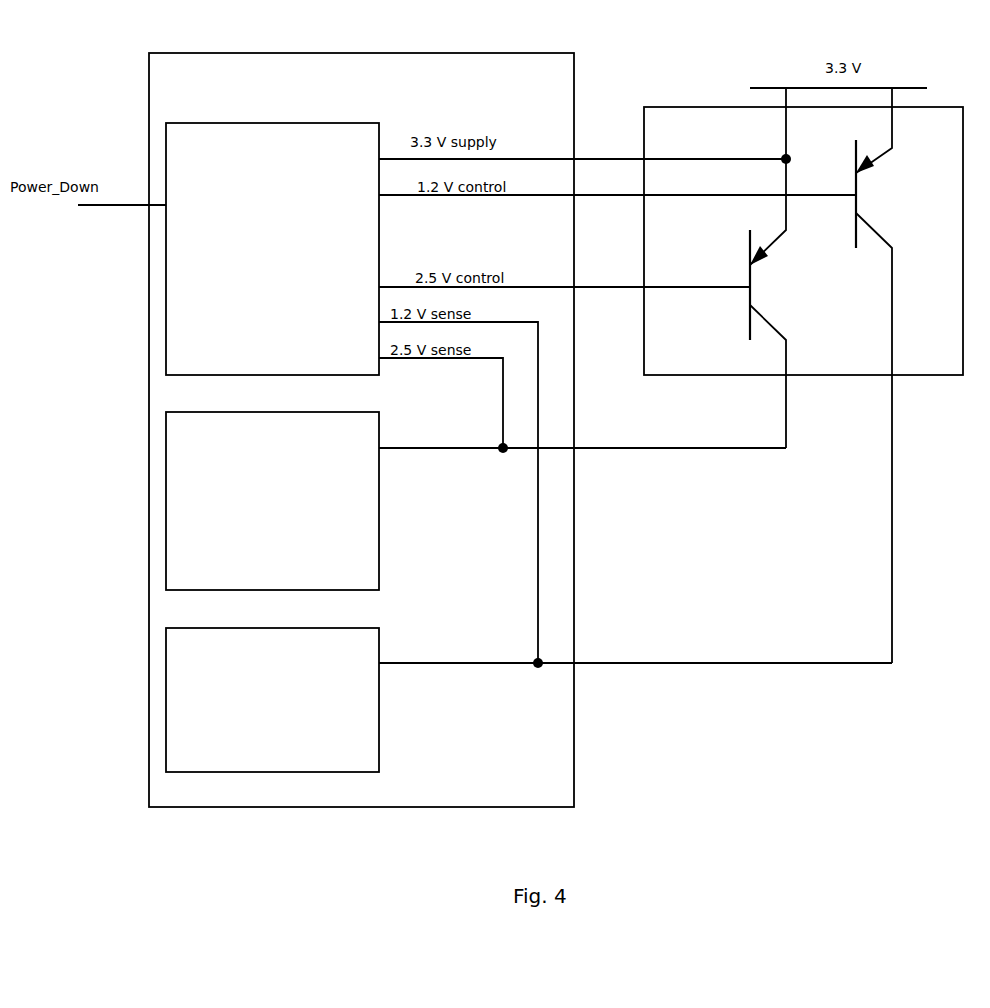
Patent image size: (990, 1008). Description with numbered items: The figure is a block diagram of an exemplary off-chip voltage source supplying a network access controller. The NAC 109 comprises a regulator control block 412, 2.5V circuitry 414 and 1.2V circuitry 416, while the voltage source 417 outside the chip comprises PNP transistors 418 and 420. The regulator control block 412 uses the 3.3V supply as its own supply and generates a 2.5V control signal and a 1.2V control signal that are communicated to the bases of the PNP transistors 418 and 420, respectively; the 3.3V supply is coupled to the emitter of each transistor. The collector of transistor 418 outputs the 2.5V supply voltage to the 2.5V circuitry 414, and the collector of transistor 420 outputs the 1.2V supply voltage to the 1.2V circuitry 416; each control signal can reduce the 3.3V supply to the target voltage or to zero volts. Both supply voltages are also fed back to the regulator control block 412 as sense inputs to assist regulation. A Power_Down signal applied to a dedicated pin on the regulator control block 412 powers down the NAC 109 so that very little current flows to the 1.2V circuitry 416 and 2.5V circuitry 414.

The NAC 109 is at (361, 430).
The regulator control block 412 is at (272, 249).
The 2.5V circuitry 414 is at (272, 501).
The 1.2V circuitry 416 is at (272, 700).
The voltage source 417 is at (681, 106).
The PNP transistor 418 is at (750, 248).
The PNP transistor 420 is at (856, 153).